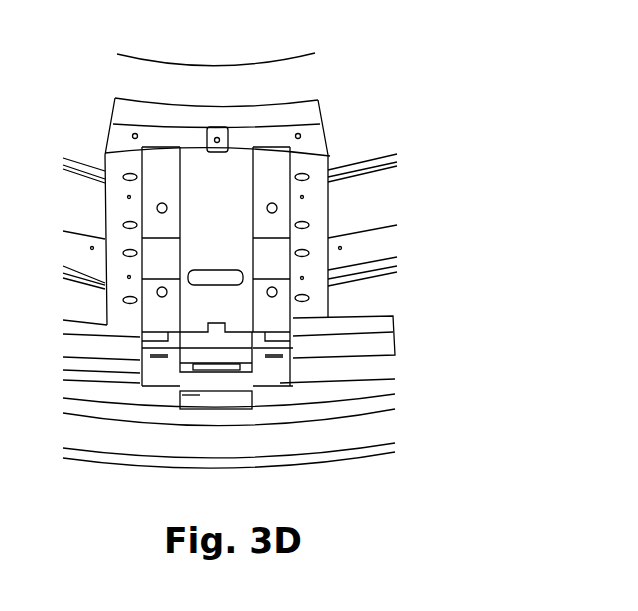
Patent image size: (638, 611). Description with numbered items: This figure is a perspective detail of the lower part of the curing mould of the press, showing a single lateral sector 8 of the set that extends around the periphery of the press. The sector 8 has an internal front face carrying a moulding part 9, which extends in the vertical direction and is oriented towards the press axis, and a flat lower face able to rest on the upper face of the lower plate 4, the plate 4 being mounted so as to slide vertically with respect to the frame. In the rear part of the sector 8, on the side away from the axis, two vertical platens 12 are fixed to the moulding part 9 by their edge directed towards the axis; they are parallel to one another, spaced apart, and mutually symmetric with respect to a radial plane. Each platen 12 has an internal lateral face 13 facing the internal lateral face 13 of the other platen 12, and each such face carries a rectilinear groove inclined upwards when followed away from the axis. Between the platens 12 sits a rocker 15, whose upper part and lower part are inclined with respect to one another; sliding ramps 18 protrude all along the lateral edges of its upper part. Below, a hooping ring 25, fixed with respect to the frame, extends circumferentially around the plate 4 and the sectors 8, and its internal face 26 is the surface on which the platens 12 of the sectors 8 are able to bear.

The lower plate 4 is at (75, 253).
The lateral sector 8 is at (115, 98).
The moulding part 9 is at (212, 105).
The vertical platen 12 is at (160, 176).
The internal lateral face 13 is at (252, 198).
The rocker 15 is at (210, 343).
The sliding ramp 18 is at (169, 333).
The hooping ring 25 is at (313, 395).
The internal face 26 is at (150, 358).